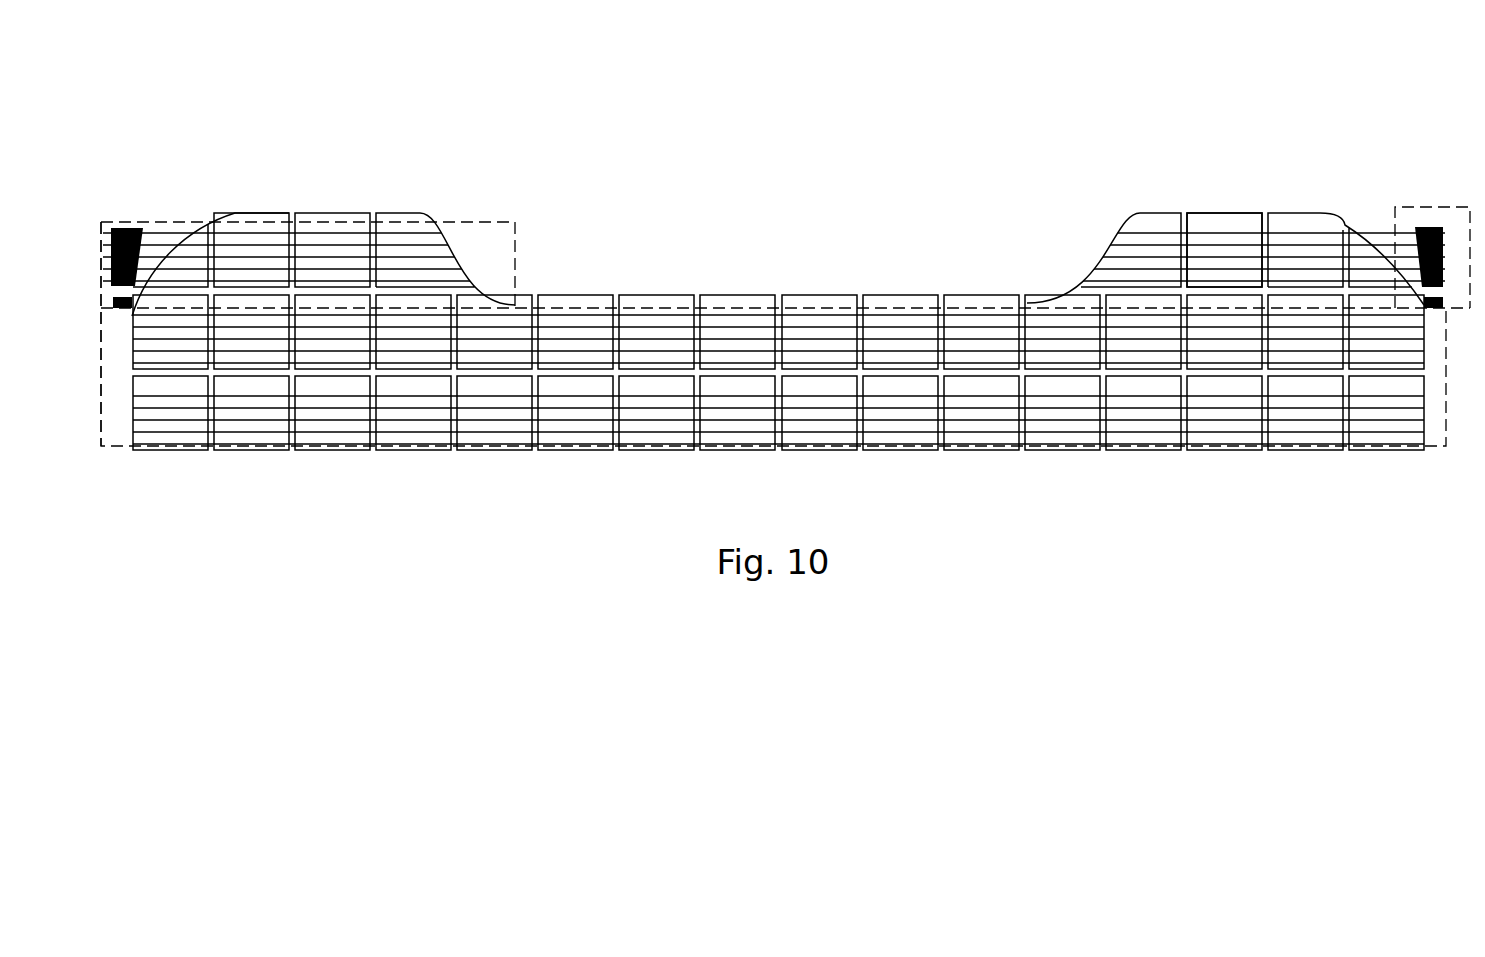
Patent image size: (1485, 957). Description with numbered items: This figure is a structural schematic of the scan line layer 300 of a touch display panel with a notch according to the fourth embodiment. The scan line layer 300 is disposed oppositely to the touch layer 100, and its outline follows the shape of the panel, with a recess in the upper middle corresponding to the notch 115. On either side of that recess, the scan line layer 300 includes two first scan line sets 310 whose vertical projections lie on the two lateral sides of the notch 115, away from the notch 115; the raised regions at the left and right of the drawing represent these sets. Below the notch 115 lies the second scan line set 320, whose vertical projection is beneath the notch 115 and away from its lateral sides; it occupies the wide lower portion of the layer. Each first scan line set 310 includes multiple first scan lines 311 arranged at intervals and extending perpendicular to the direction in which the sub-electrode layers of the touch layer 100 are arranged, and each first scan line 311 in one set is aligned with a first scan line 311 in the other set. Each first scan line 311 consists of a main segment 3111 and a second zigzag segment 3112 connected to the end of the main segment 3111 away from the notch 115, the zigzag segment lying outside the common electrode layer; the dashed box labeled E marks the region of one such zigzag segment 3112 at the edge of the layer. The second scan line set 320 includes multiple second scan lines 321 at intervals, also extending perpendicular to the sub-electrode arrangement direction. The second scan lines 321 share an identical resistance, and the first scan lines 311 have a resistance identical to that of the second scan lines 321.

The scan line layer 300 is at (248, 85).
The second scan line set 320 is at (108, 222).
The first scan line set 310 is at (178, 223).
The first scan line 311 is at (428, 232).
The main segment 3111 is at (1300, 232).
The second zigzag segment 3112 is at (1413, 230).
The touch layer 100 is at (1227, 218).
The notch 115 is at (750, 288).
The second scan line 321 is at (338, 432).
The region E is at (1432, 242).